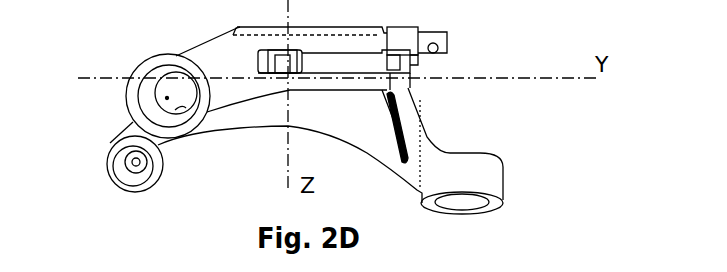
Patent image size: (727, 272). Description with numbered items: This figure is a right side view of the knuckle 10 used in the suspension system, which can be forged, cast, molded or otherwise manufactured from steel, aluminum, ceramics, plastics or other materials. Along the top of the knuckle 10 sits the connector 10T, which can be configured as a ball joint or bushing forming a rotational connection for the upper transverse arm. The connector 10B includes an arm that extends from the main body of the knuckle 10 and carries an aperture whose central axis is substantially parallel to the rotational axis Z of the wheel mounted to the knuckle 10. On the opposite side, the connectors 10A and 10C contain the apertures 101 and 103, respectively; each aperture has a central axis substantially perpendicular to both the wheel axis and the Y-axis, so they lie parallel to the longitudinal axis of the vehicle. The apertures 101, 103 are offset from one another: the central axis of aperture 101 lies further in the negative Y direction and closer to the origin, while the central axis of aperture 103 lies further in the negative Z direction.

The knuckle 10 is at (590, 131).
The connector 10A is at (152, 178).
The connector 10B is at (467, 177).
The connector 10C is at (128, 95).
The connector 10T is at (420, 100).
The aperture 101 is at (125, 163).
The aperture 103 is at (147, 108).